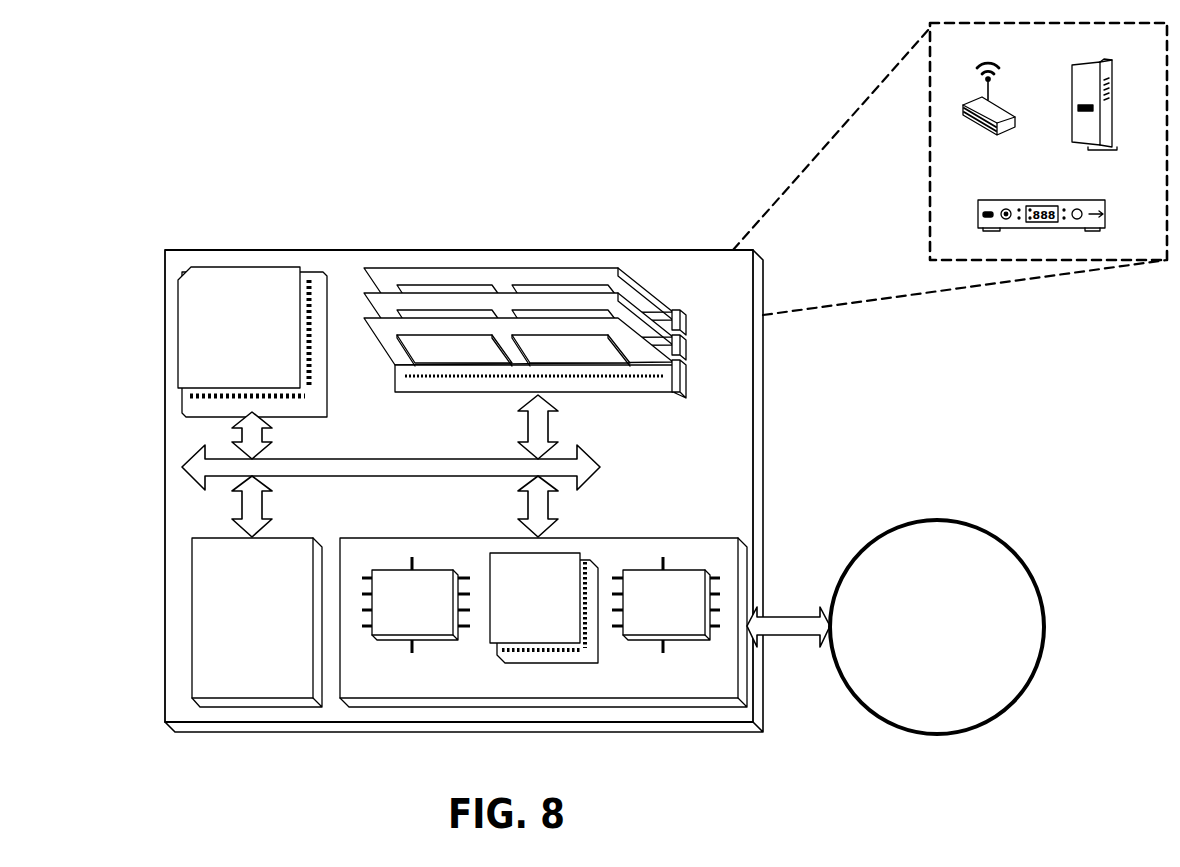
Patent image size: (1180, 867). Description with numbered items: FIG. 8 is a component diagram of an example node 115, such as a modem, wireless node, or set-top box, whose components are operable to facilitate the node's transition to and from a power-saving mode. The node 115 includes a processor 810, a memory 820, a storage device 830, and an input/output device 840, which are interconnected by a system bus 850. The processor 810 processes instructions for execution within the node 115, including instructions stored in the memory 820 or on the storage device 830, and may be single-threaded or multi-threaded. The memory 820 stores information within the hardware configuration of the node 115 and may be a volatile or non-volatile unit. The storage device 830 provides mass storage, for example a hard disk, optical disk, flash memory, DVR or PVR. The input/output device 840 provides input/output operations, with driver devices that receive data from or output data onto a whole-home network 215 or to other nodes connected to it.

The node 115 is at (129, 760).
The processor 810 is at (293, 385).
The memory 820 is at (660, 308).
The storage device 830 is at (304, 693).
The input/output device 840 is at (703, 538).
The system bus 850 is at (390, 477).
The whole-home network 215 is at (876, 535).